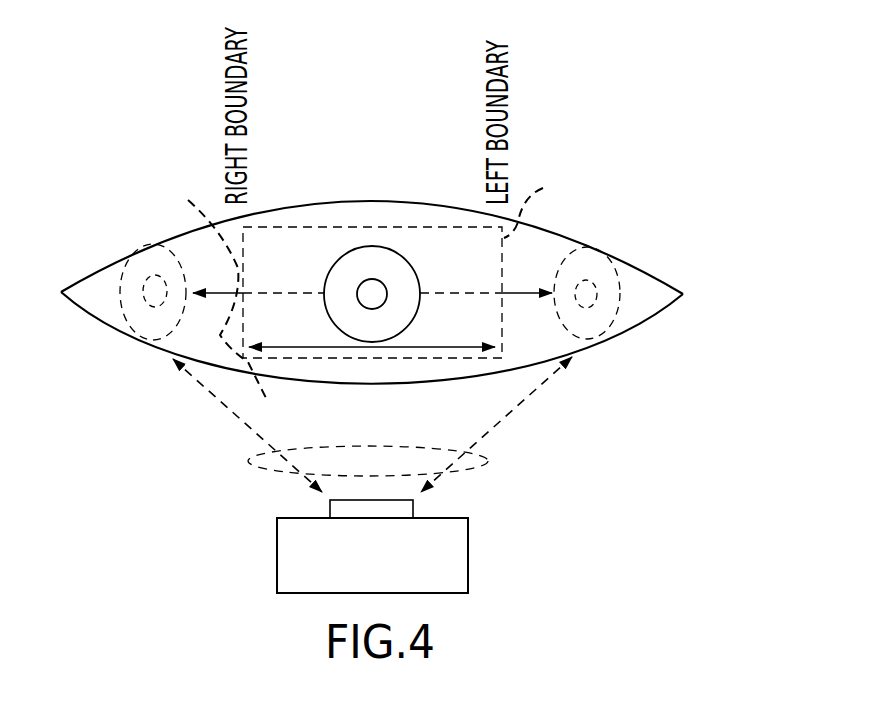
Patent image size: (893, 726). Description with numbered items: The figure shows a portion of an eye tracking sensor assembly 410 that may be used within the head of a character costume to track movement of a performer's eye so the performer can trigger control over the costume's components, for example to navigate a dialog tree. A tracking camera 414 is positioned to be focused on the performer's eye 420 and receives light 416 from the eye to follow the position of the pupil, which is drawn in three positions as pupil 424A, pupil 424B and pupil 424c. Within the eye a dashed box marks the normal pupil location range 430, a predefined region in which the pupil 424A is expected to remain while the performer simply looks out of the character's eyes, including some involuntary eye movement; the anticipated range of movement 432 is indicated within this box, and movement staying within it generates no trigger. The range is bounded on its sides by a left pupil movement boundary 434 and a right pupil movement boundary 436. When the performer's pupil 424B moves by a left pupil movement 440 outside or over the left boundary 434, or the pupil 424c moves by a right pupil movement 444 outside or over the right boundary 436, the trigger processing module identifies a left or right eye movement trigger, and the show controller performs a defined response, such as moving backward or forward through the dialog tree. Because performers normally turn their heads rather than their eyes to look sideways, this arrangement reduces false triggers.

The eye tracking sensor assembly 410 is at (742, 154).
The tracking camera 414 is at (468, 553).
The light 416 is at (490, 460).
The eye 420 is at (700, 272).
The pupil 424A is at (364, 266).
The pupil 424B is at (603, 278).
The pupil 424c is at (135, 308).
The normal pupil location range 430 is at (372, 424).
The range of movement 432 is at (418, 349).
The left pupil movement boundary 434 is at (542, 203).
The right pupil movement boundary 436 is at (217, 288).
The left pupil movement 440 is at (510, 297).
The right pupil movement 444 is at (218, 328).